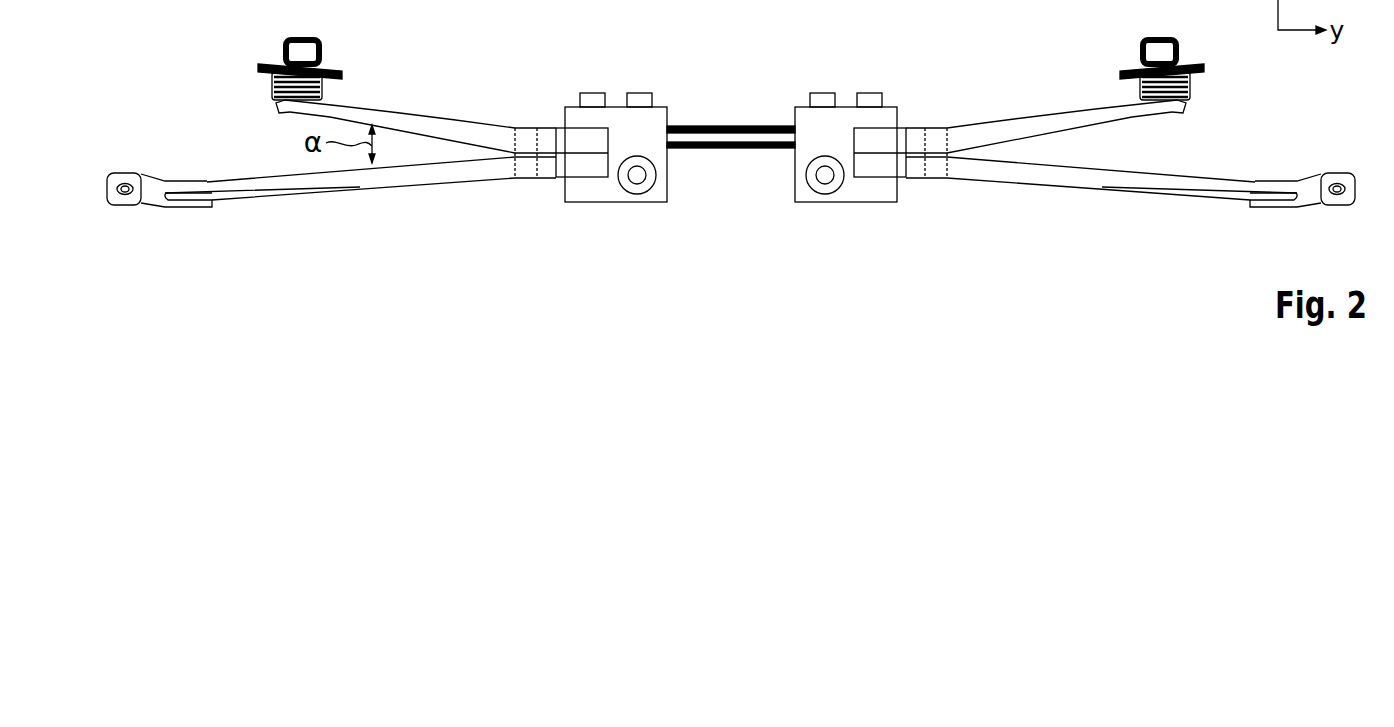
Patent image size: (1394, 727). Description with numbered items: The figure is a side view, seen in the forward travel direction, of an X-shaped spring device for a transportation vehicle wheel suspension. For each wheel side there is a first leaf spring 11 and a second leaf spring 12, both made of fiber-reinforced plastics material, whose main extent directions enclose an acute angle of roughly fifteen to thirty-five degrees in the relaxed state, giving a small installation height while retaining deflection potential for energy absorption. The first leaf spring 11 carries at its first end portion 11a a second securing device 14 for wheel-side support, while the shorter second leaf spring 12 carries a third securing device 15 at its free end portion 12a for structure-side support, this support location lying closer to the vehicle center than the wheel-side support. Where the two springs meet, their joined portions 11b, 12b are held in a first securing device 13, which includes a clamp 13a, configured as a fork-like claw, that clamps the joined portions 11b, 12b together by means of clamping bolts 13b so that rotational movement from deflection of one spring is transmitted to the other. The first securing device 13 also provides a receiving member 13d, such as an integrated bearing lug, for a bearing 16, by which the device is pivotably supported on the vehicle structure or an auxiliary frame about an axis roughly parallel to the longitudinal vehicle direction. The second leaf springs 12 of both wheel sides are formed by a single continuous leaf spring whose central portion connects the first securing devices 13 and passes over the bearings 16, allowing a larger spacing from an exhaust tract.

The first leaf spring 11 is at (318, 189).
The first end portion 11a is at (182, 207).
The joined portion 11b is at (582, 167).
The second leaf spring 12 is at (440, 127).
The free end portion 12a is at (278, 105).
The joined portion 12b is at (582, 137).
The first securing device 13 is at (642, 122).
The clamp 13a is at (604, 178).
The clamping bolts 13b is at (593, 92).
The receiving member 13d is at (660, 175).
The second securing device 14 is at (125, 200).
The third securing device 15 is at (258, 67).
The bearing 16 is at (638, 180).